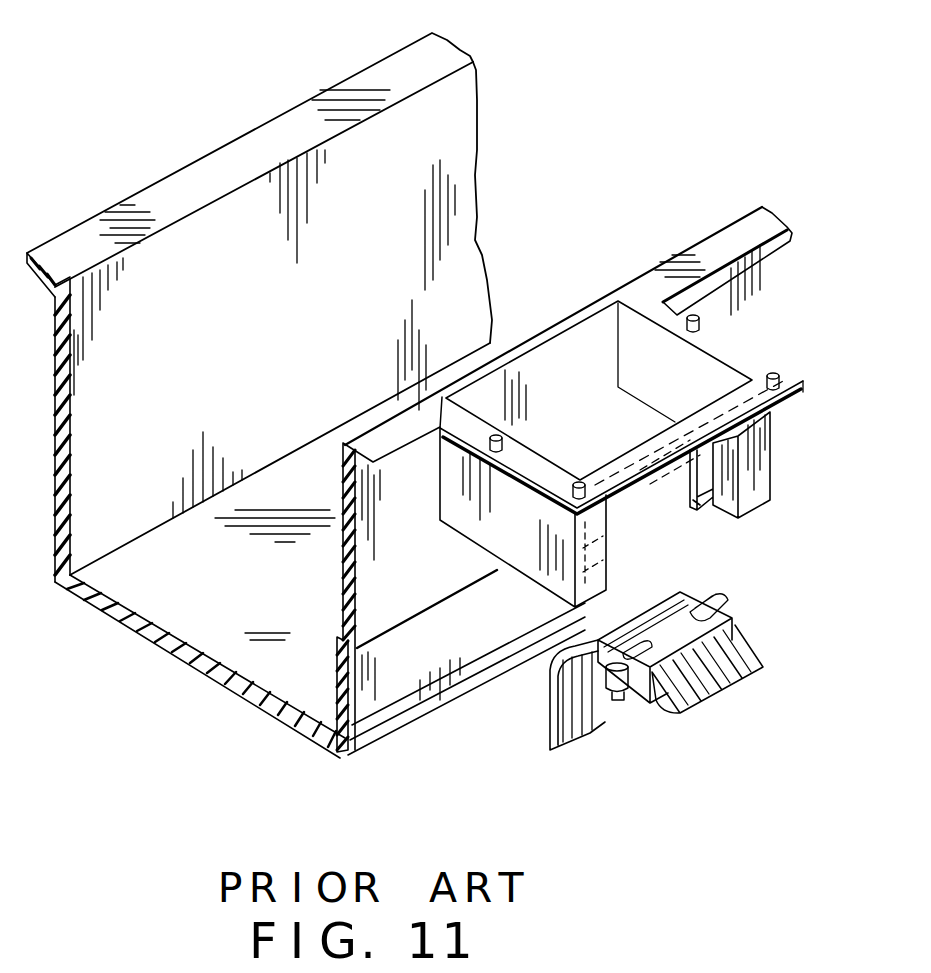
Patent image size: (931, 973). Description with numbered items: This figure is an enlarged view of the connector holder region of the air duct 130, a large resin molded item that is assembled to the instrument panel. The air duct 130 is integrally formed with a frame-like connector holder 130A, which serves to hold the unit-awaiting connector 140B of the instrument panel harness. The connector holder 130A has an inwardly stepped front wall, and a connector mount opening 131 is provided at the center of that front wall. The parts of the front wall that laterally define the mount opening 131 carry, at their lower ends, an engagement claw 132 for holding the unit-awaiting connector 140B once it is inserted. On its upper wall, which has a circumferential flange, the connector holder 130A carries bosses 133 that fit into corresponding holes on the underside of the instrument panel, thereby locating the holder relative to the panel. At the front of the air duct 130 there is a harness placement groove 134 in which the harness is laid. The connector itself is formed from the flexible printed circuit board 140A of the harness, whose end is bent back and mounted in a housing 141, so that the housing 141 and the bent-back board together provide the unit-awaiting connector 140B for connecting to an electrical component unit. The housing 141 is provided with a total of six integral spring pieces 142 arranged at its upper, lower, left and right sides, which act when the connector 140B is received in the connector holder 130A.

The air duct 130 is at (492, 94).
The connector holder 130A is at (760, 480).
The connector mount opening 131 is at (657, 510).
The engagement claw 132 is at (560, 592).
The bosses 133 is at (774, 372).
The harness placement groove 134 is at (397, 677).
The flexible printed circuit board 140A is at (567, 748).
The unit-awaiting connector 140B is at (687, 719).
The housing 141 is at (728, 690).
The spring pieces 142 is at (651, 697).